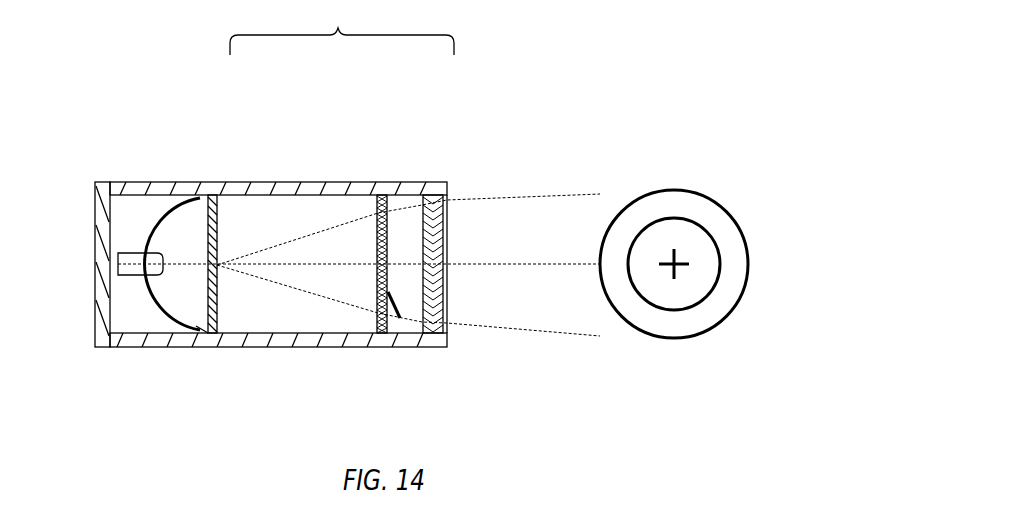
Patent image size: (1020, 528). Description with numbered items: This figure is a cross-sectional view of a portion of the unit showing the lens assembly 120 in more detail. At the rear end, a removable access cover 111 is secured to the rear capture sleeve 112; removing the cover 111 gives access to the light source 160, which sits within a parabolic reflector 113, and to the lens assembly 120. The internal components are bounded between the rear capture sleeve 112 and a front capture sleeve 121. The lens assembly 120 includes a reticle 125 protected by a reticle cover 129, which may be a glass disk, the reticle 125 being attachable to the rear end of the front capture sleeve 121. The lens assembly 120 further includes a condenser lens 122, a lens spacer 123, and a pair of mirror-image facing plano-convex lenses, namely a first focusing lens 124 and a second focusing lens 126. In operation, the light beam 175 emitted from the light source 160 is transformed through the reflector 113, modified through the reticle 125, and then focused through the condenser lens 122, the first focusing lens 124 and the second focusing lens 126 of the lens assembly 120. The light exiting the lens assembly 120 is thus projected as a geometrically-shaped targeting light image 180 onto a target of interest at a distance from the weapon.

The removable access cover 111 is at (98, 263).
The rear capture sleeve 112 is at (127, 183).
The parabolic reflector 113 is at (165, 197).
The lens assembly 120 is at (342, 27).
The front capture sleeve 121 is at (333, 341).
The condenser lens 122 is at (388, 292).
The lens spacer 123 is at (398, 223).
The first focusing lens 124 is at (444, 192).
The reticle 125 is at (217, 268).
The second focusing lens 126 is at (447, 257).
The reticle cover 129 is at (205, 318).
The light source 160 is at (160, 258).
The light beam 175 is at (539, 303).
The targeting light image 180 is at (722, 210).